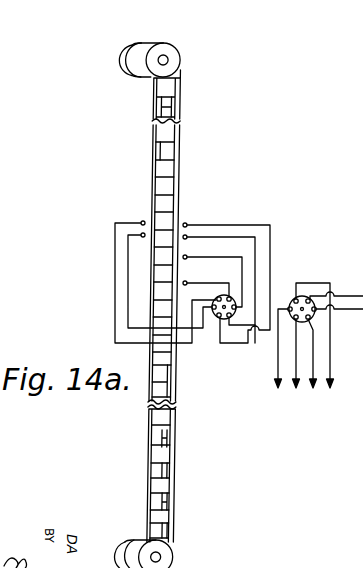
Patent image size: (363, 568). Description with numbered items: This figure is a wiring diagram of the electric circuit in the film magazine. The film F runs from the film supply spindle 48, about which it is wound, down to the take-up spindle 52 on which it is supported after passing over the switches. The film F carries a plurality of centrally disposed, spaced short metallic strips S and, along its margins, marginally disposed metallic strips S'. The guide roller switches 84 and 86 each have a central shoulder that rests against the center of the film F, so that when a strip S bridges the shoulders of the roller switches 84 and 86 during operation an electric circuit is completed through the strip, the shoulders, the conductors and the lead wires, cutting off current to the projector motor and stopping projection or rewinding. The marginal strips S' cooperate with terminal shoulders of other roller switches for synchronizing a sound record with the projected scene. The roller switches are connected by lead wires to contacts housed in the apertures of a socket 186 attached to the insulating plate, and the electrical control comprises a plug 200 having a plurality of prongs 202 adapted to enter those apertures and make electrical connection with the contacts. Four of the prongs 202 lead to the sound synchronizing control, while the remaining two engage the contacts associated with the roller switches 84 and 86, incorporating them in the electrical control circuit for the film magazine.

The film supply spindle 48 is at (168, 56).
The take-up spindle 52 is at (171, 556).
The film F is at (172, 90).
The short metallic strips S is at (184, 317).
The marginally disposed metallic strips S' is at (160, 269).
The guide roller switch 84 is at (188, 257).
The guide roller switch 86 is at (188, 283).
The socket 186 is at (235, 297).
The plug 200 is at (303, 296).
The prongs 202 is at (297, 328).